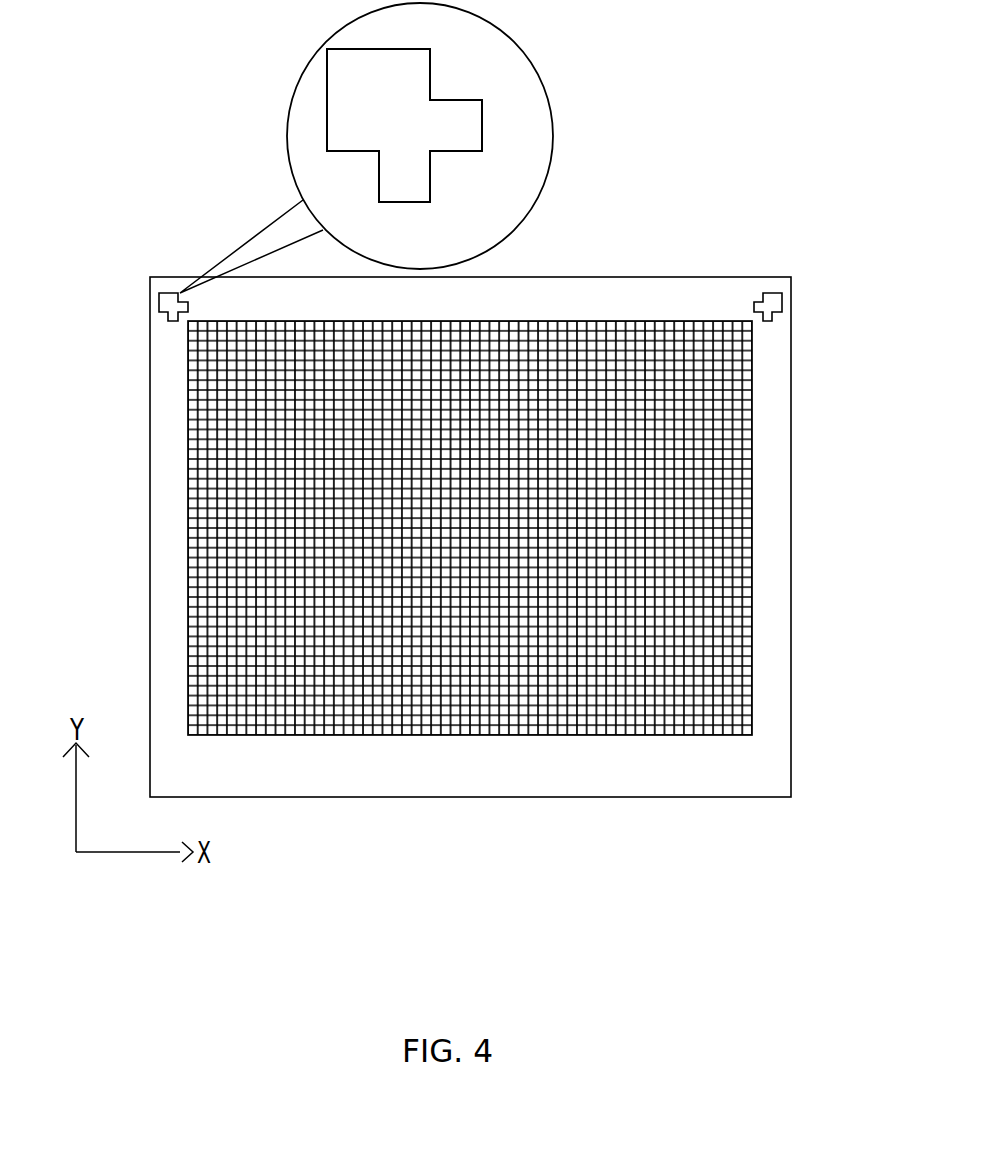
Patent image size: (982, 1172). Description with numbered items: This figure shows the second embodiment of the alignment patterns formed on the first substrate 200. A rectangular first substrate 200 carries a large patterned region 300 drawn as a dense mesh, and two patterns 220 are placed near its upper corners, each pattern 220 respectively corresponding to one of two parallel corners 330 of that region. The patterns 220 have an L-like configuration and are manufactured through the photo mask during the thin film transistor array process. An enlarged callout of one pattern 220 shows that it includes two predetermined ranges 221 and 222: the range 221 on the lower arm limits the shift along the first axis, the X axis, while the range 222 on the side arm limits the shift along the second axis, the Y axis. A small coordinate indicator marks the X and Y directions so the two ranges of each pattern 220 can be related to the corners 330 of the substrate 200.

The first substrate 200 is at (462, 783).
The pattern 220 is at (170, 297).
The predetermined range 221 is at (430, 210).
The predetermined range 222 is at (492, 100).
The mesh pattern 300 is at (713, 440).
The corner 330 is at (188, 322).